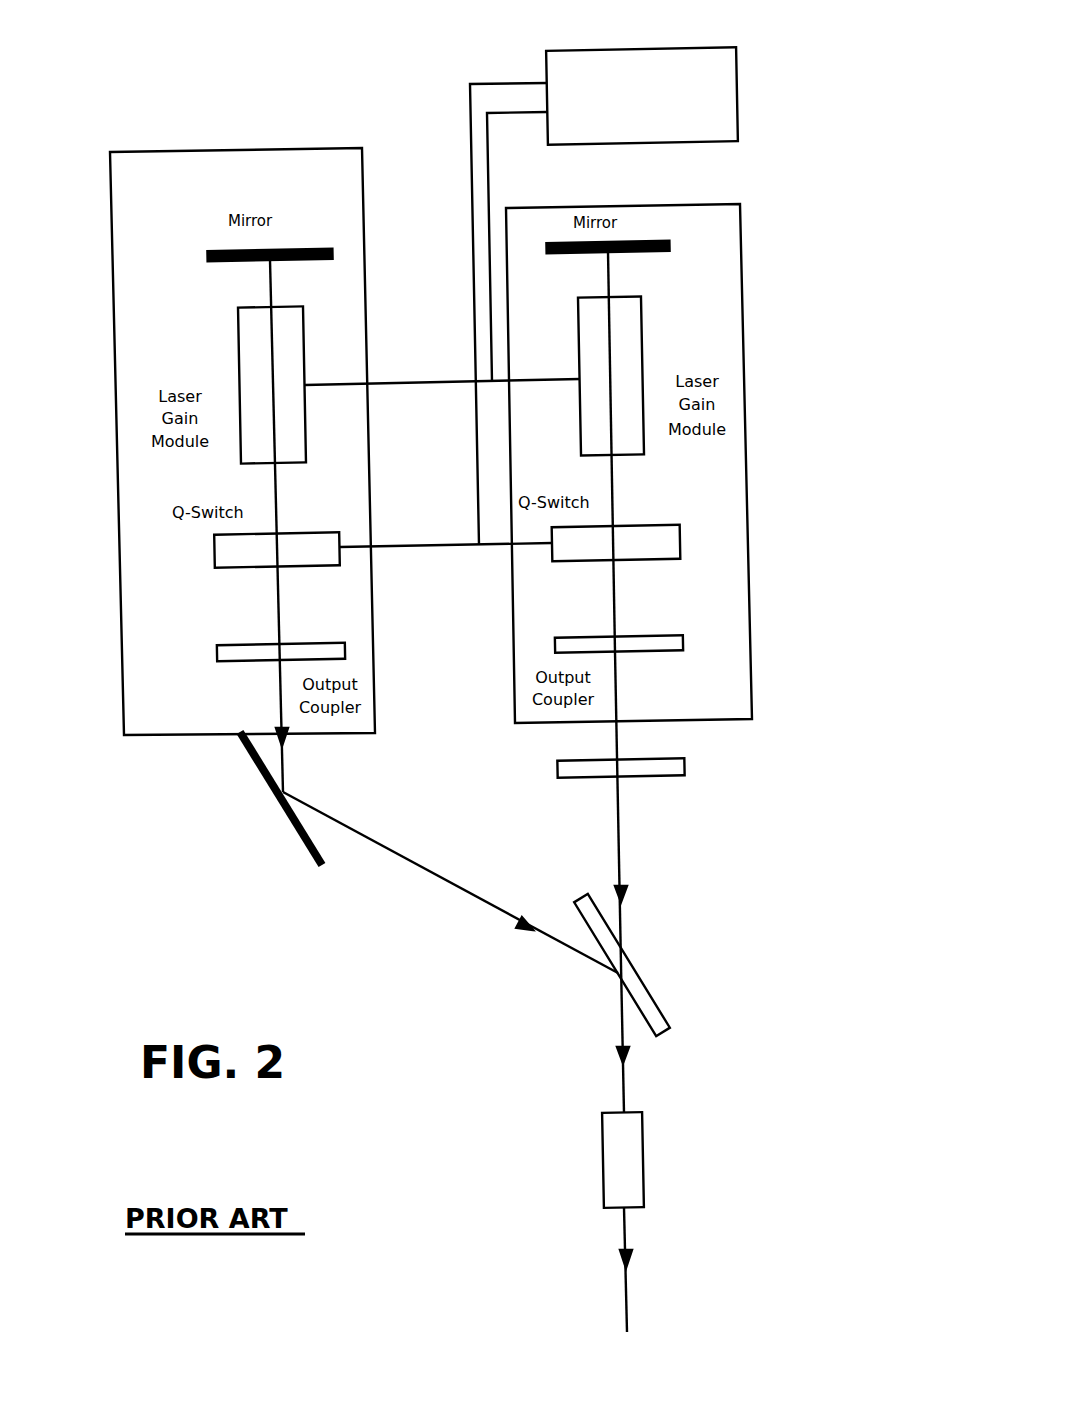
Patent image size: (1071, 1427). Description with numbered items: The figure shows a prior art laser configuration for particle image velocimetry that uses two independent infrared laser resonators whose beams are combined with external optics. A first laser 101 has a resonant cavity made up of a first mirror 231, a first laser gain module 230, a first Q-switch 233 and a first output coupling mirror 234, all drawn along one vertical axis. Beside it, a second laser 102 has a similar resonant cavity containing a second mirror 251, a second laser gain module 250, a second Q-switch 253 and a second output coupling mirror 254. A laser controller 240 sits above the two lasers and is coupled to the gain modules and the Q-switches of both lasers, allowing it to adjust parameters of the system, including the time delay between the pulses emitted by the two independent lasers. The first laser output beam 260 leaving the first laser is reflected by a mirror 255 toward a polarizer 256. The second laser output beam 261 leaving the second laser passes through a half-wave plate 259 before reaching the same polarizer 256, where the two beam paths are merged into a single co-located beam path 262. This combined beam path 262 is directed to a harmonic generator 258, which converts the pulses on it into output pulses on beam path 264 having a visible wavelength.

The first laser 101 is at (122, 262).
The second laser 102 is at (743, 306).
The first laser gain module 230 is at (240, 375).
The first mirror 231 is at (298, 250).
The first Q-switch 233 is at (215, 557).
The first output coupling mirror 234 is at (217, 655).
The laser controller 240 is at (705, 50).
The second laser gain module 250 is at (643, 352).
The second mirror 251 is at (642, 242).
The second Q-switch 253 is at (680, 537).
The second output coupling mirror 254 is at (683, 640).
The mirror 255 is at (310, 848).
The polarizer 256 is at (657, 1003).
The harmonic generator 258 is at (643, 1158).
The half-wave plate 259 is at (685, 766).
The first laser output beam 260 is at (482, 900).
The second laser output beam 261 is at (625, 862).
The co-located beam path 262 is at (620, 1020).
The output beam path 264 is at (627, 1302).